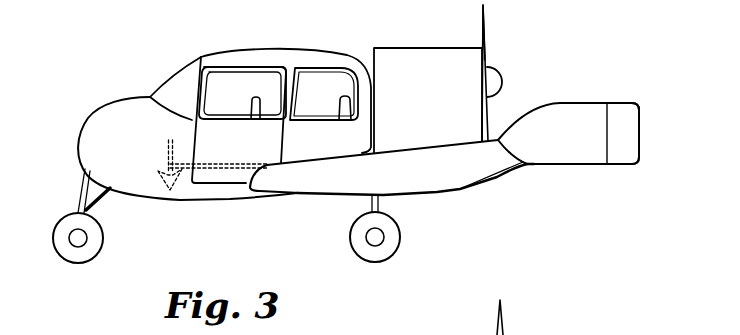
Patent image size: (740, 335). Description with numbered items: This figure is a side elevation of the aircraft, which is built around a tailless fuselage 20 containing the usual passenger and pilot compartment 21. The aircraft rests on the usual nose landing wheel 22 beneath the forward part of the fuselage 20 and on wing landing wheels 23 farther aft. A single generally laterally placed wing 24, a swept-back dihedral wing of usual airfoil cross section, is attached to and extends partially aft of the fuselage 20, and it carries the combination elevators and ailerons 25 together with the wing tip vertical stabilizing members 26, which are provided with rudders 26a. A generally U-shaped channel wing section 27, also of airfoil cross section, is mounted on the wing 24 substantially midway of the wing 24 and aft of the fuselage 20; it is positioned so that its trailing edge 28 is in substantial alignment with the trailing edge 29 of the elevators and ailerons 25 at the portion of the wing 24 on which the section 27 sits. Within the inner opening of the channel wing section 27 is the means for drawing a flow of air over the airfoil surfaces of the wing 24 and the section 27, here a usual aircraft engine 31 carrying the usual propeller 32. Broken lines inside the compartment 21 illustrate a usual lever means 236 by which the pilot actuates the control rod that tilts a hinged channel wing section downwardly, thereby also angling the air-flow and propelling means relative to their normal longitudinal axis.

The tailless fuselage 20 is at (85, 116).
The passenger and pilot compartment 21 is at (217, 88).
The nose landing wheel 22 is at (62, 233).
The wing landing wheels 23 is at (357, 240).
The generally laterally placed wing 24 is at (453, 175).
The combination elevators and ailerons 25 is at (515, 170).
The wing tip vertical stabilizing members 26 is at (582, 153).
The rudders 26a is at (633, 147).
The generally U-shaped channel wing section 27 is at (418, 57).
The trailing edge of channel wing section 28 is at (487, 58).
The trailing edge of elevators and ailerons 29 is at (533, 167).
The aircraft engine 31 is at (498, 83).
The propeller 32 is at (487, 25).
The lever means 236 is at (161, 191).